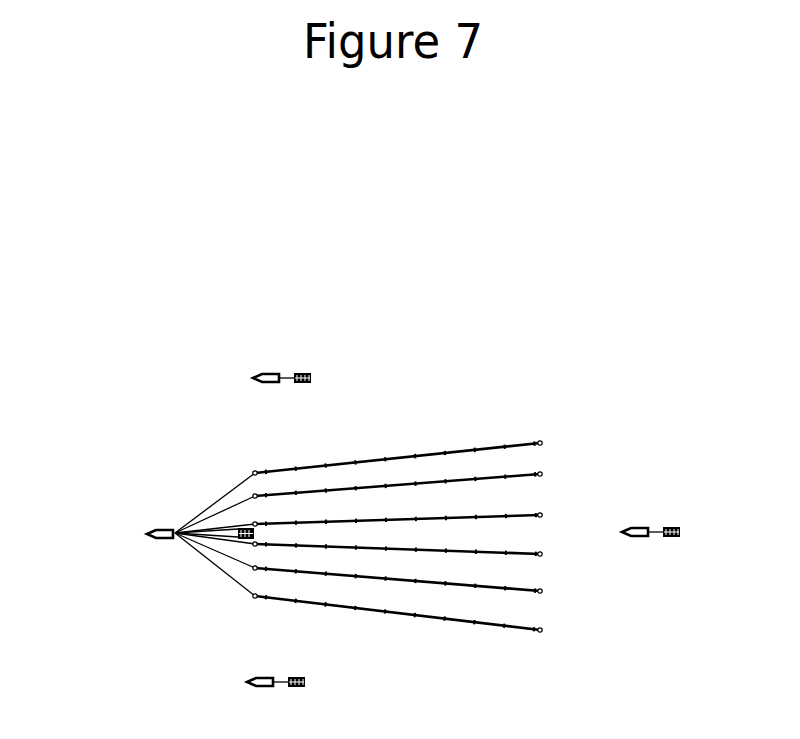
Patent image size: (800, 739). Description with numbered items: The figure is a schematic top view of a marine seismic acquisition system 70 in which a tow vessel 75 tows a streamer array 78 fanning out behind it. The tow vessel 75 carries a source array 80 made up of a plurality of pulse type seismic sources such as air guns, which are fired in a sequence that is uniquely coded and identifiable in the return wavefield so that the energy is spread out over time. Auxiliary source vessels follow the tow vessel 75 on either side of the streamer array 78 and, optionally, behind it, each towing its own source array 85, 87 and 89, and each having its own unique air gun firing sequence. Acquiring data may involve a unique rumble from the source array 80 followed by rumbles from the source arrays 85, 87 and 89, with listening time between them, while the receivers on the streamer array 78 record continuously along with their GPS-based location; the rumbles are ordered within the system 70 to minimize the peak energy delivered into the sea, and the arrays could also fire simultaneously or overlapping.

The marine seismic acquisition system 70 is at (146, 336).
The tow vessel 75 is at (153, 540).
The streamer array 78 is at (527, 416).
The source array 80 is at (240, 528).
The source array 85 is at (682, 511).
The source array 87 is at (319, 358).
The source array 89 is at (312, 661).